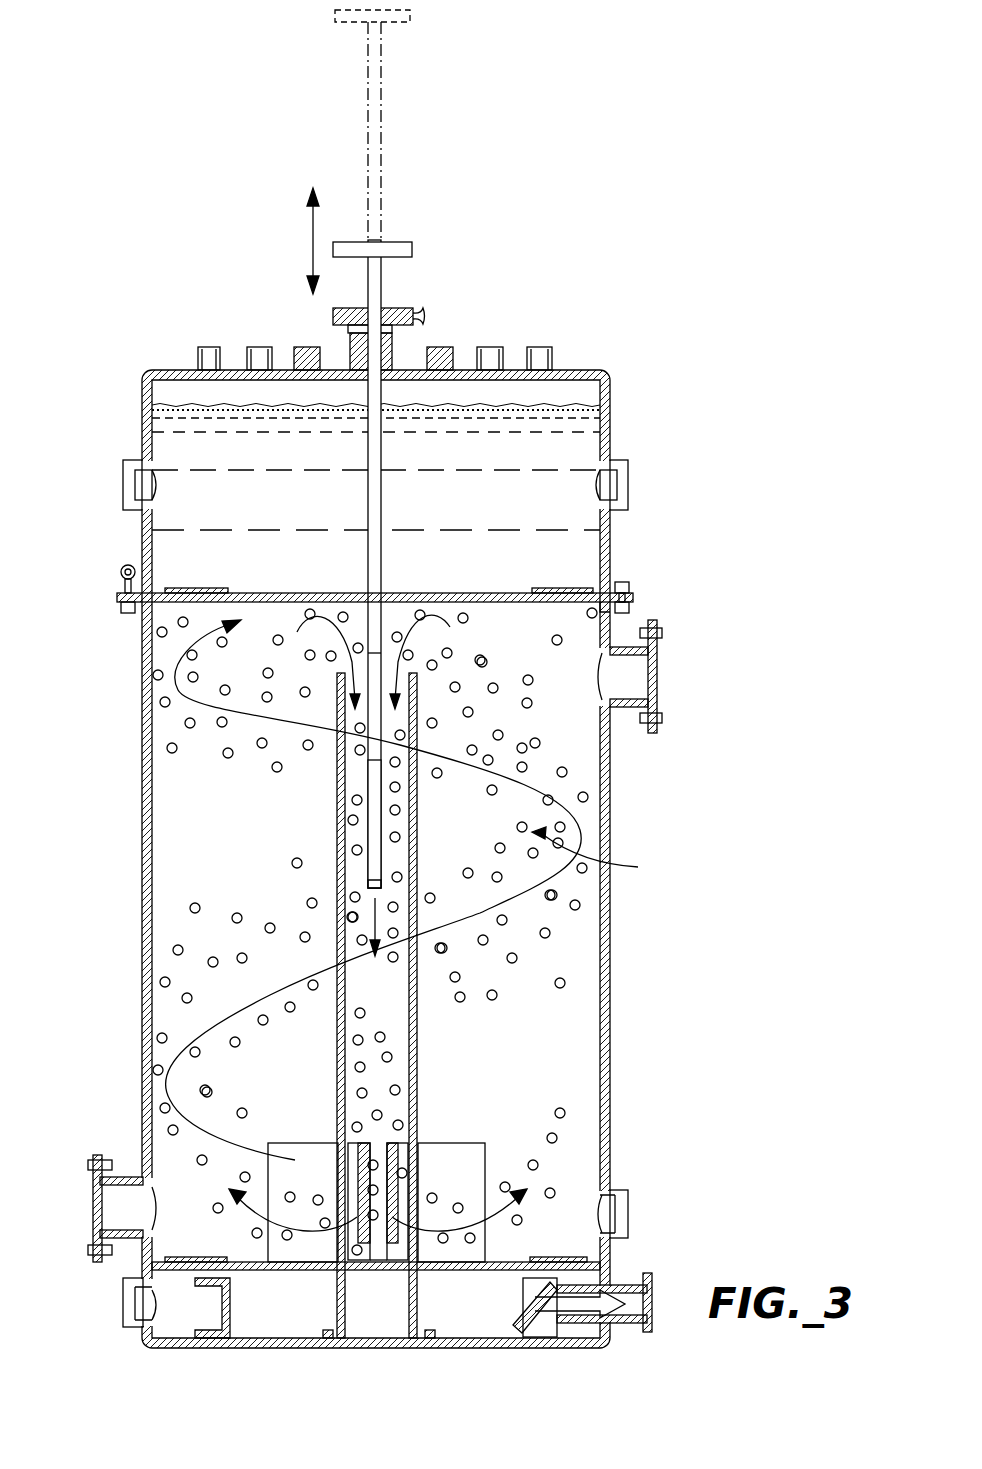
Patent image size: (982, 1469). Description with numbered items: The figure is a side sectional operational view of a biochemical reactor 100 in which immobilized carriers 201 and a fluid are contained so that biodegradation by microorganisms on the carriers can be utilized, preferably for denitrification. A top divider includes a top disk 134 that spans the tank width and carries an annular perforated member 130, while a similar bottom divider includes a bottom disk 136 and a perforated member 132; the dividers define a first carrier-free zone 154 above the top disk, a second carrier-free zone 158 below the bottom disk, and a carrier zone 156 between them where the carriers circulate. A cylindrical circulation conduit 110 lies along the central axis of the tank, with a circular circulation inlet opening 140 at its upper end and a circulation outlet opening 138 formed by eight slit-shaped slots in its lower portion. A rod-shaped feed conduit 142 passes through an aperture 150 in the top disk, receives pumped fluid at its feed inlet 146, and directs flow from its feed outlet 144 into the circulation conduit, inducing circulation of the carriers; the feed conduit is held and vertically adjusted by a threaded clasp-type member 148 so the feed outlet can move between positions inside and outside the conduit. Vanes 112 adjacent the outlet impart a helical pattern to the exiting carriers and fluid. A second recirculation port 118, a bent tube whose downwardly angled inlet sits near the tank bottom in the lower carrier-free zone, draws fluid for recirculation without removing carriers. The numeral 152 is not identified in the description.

The biochemical reactor 100 is at (407, 683).
The feed inlet 146 is at (390, 247).
The threaded clasp-type member 148 is at (422, 312).
The first carrier-free zone 154 is at (188, 452).
The circulation inlet opening 140 is at (360, 653).
The aperture 150 is at (382, 593).
The top disk 134 is at (467, 593).
The perforated member 130 is at (553, 590).
The carrier zone 156 is at (572, 753).
The immobilized carriers 201 is at (167, 842).
The feed conduit 142 is at (375, 837).
The feed outlet 144 is at (368, 893).
The circulation conduit 110 is at (417, 1045).
The vanes 112 is at (383, 1143).
The bottom disk 136 is at (517, 1257).
The perforated member 132 is at (576, 1257).
The bottom compartment 152 is at (337, 1318).
The circulation outlet opening 138 is at (390, 1253).
The second carrier-free zone 158 is at (183, 1322).
The second recirculation port 118 is at (652, 1323).